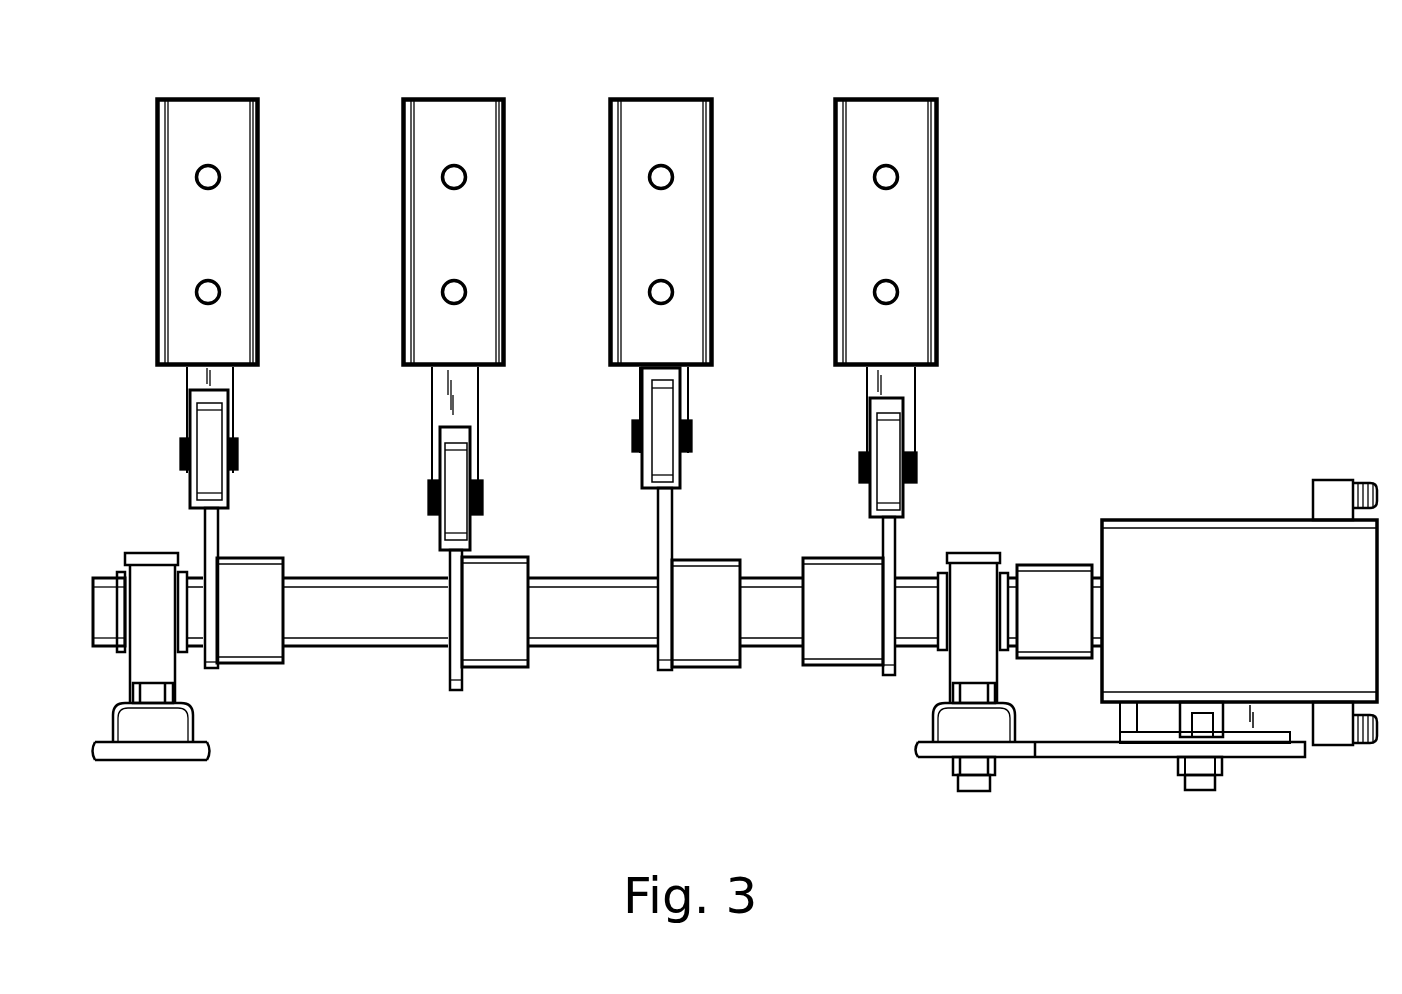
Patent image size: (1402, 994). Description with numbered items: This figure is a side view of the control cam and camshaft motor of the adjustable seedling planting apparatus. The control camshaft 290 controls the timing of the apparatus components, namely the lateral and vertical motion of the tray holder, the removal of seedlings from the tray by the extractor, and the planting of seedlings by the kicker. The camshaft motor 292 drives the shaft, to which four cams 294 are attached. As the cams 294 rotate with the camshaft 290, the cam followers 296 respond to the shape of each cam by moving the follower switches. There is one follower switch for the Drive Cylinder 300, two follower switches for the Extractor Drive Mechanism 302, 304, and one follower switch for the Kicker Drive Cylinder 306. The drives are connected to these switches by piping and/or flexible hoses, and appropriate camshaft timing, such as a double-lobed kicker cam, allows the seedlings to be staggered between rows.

The control camshaft 290 is at (328, 627).
The camshaft motor 292 is at (1177, 537).
The cams 294 is at (218, 533).
The cam followers 296 is at (185, 373).
The follower switch for the Drive Cylinder 300 is at (218, 97).
The follower switch for the Extractor Drive Mechanism 302 is at (465, 97).
The follower switch for the Extractor Drive Mechanism 304 is at (677, 97).
The follower switch for the Kicker Drive Cylinder 306 is at (890, 97).